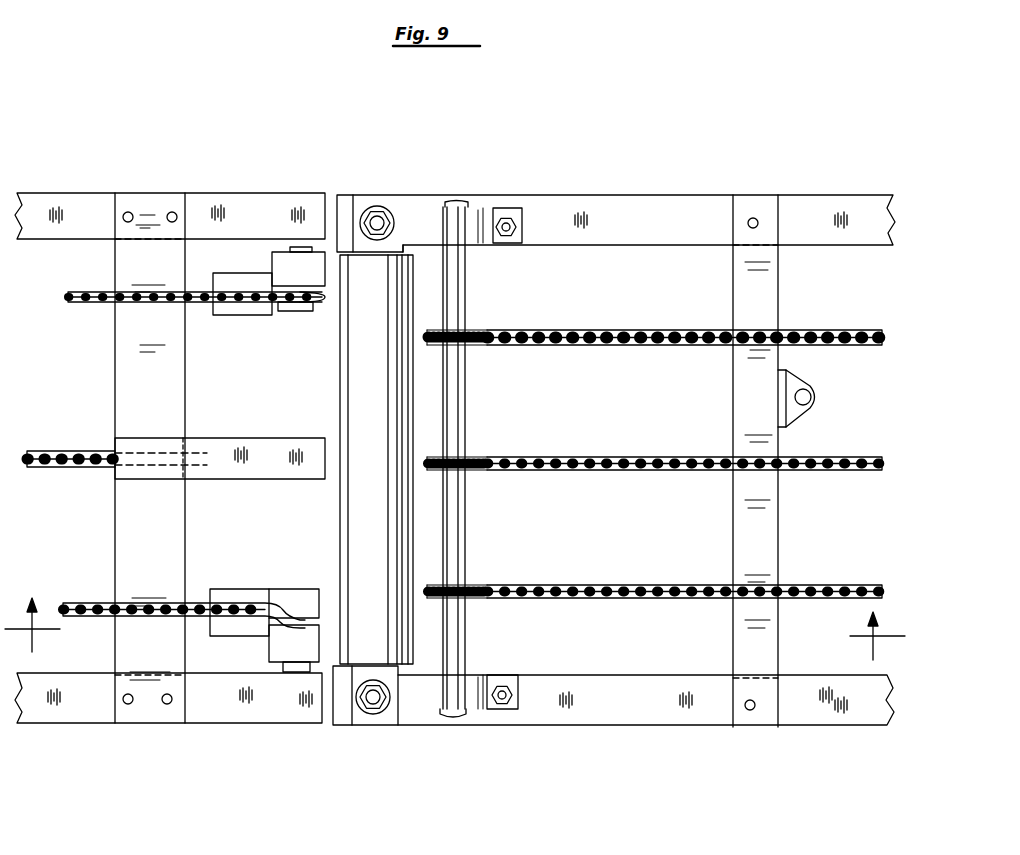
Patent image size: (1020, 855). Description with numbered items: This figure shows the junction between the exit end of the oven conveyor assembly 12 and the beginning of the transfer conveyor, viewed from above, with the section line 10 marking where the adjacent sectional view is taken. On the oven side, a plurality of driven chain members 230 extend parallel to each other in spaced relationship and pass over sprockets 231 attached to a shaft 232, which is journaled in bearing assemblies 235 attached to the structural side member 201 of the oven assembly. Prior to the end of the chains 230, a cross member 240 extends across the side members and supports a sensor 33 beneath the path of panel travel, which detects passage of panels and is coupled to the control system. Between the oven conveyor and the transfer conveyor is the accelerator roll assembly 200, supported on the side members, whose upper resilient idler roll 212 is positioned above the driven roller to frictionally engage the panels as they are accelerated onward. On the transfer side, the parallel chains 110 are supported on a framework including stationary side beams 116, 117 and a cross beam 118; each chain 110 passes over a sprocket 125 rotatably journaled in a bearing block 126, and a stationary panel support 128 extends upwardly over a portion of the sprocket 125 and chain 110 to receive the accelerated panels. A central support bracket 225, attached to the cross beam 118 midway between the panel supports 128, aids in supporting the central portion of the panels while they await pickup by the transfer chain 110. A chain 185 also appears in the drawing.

The section line 10 is at (455, 632).
The oven conveyor assembly 12 is at (607, 311).
The sensor 33 is at (800, 383).
The chains 110 is at (90, 292).
The side beam 116 is at (200, 710).
The side beam 117 is at (210, 197).
The cross beam 118 is at (167, 508).
The sprocket 125 is at (324, 303).
The bearing block 126 is at (283, 265).
The panel support 128 is at (240, 308).
The chain 185 is at (50, 451).
The accelerator roll assembly 200 is at (326, 376).
The structural side member 201 is at (675, 712).
The upper resilient idler roll 212 is at (362, 497).
The central support bracket 225 is at (263, 443).
The driven chain members 230 is at (660, 333).
The sprockets 231 is at (480, 335).
The shaft 232 is at (462, 277).
The bearing assemblies 235 is at (480, 212).
The cross member 240 is at (765, 283).